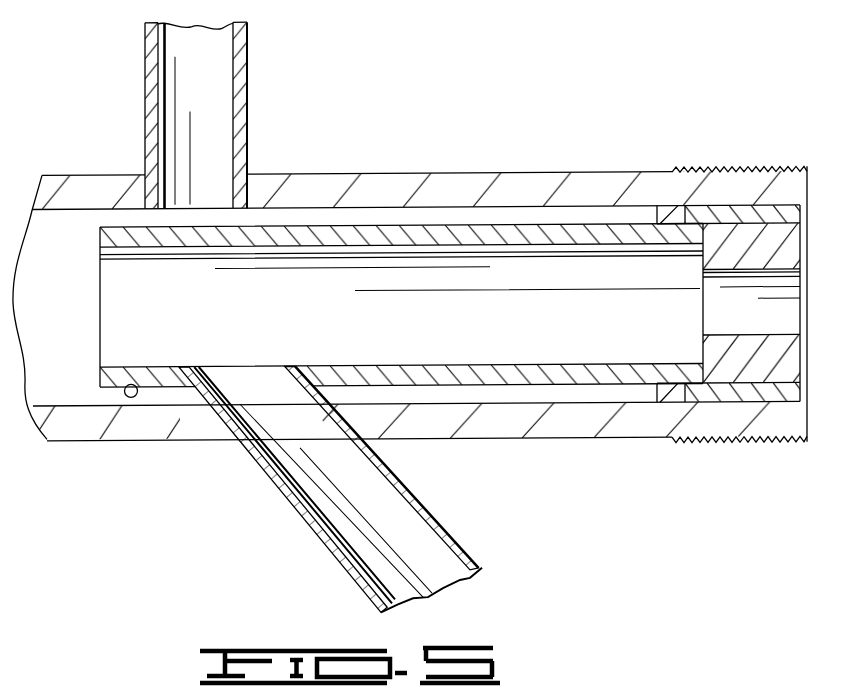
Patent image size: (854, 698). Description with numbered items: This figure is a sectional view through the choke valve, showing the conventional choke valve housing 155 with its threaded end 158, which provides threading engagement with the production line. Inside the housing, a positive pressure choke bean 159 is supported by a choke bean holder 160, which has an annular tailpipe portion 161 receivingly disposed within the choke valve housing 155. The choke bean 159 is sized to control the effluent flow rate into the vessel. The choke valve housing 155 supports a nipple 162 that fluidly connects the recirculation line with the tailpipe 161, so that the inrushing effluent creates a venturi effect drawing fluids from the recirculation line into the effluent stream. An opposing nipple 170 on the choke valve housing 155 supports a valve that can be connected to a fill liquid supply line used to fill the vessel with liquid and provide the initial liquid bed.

The choke valve housing 155 is at (450, 173).
The threaded end 158 is at (704, 168).
The positive pressure choke bean 159 is at (735, 336).
The choke bean holder 160 is at (452, 392).
The annular tailpipe portion 161 is at (137, 385).
The nipple 162 is at (334, 553).
The opposing nipple 170 is at (249, 52).